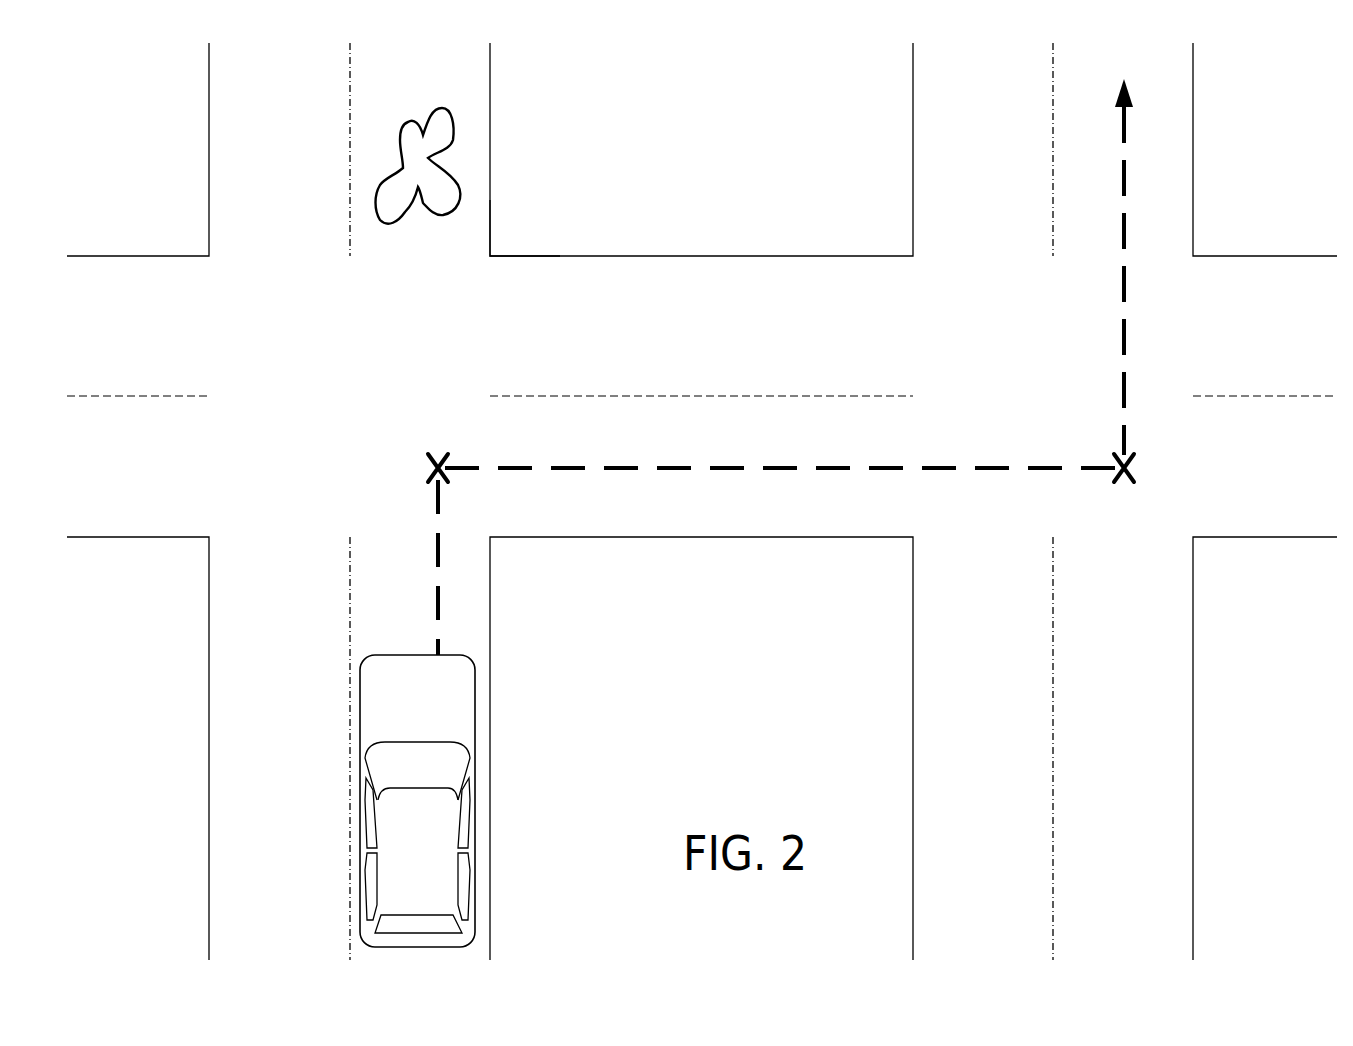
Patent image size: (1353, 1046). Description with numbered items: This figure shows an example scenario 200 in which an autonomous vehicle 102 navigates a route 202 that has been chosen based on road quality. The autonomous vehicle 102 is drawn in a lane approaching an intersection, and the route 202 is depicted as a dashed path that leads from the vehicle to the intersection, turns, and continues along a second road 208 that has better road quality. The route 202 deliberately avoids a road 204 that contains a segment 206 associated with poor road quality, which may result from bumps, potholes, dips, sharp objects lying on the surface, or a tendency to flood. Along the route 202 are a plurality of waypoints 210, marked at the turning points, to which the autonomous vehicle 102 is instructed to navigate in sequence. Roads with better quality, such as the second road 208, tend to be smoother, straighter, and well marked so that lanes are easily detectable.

The scenario 200 is at (134, 72).
The autonomous vehicle 102 is at (477, 758).
The route 202 is at (877, 466).
The road 204 is at (470, 232).
The segment 206 is at (455, 128).
The second road 208 is at (1158, 214).
The waypoints 210 is at (433, 452).